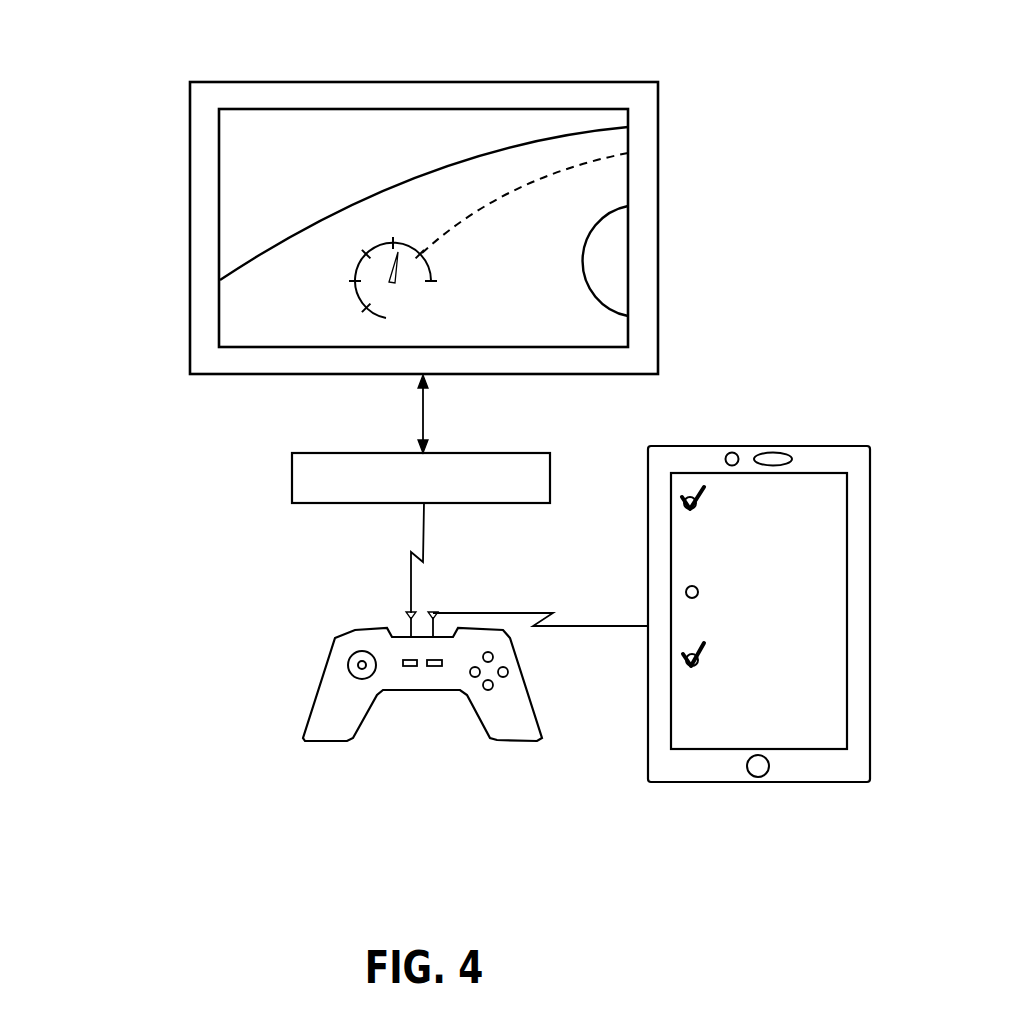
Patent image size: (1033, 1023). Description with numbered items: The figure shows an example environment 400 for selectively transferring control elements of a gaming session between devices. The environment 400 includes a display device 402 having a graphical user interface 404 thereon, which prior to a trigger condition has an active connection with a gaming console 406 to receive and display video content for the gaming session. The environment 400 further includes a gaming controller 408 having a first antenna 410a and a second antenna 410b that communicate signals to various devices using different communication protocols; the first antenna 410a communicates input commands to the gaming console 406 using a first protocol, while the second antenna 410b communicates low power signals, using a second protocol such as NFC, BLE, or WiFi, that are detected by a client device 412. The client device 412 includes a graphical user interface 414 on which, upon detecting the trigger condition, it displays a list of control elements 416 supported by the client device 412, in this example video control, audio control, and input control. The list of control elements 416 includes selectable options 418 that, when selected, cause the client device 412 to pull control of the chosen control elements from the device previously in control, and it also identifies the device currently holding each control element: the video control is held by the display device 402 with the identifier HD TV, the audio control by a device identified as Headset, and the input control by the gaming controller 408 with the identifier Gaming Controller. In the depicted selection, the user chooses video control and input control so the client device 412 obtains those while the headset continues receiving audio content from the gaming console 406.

The environment 400 is at (116, 396).
The display device 402 is at (242, 80).
The graphical user interface 404 is at (521, 133).
The gaming console 406 is at (421, 478).
The gaming controller 408 is at (325, 668).
The first antenna 410a is at (406, 613).
The second antenna 410b is at (435, 610).
The client device 412 is at (761, 446).
The graphical user interface 414 is at (822, 490).
The list of control elements 416 is at (832, 733).
The selectable options 418 is at (684, 659).